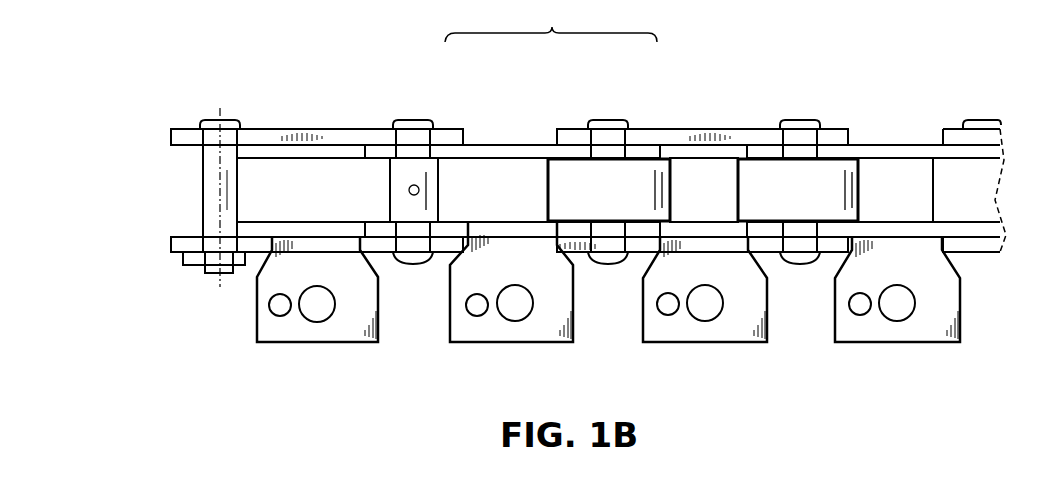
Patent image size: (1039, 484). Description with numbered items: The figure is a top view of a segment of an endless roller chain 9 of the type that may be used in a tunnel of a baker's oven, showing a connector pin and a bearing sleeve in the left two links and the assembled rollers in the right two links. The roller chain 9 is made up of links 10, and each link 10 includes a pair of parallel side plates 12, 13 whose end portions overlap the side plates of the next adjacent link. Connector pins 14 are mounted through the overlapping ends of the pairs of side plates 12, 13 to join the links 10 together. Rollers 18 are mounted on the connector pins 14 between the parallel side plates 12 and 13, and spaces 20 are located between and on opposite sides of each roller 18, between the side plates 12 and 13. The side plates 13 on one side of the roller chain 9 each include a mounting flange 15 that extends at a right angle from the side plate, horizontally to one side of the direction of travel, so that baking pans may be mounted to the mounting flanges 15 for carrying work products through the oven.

The roller chain 9 is at (551, 22).
The link 10 is at (363, 119).
The side plate 12 is at (280, 129).
The side plate 13 is at (265, 247).
The connector pin 14 is at (203, 203).
The mounting flange 15 is at (278, 335).
The roller 18 is at (596, 196).
The space 20 is at (292, 196).